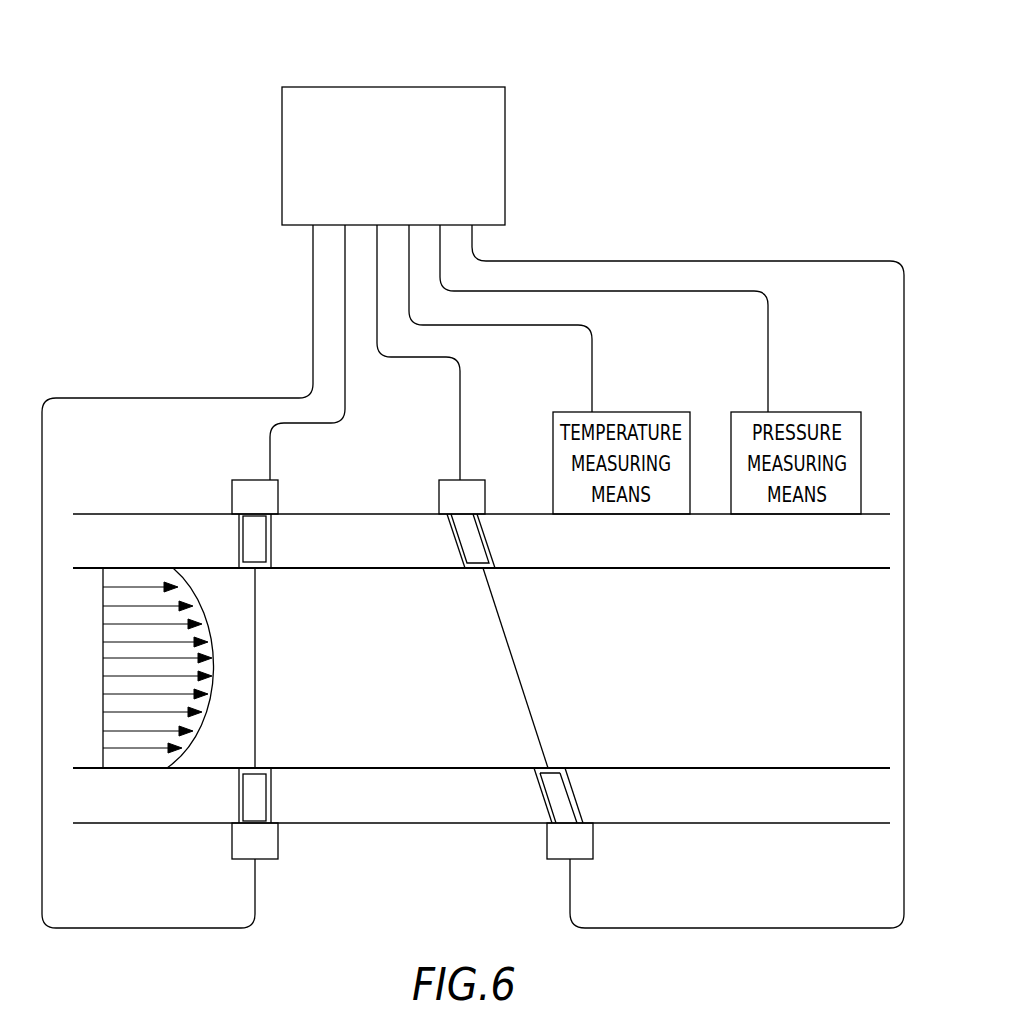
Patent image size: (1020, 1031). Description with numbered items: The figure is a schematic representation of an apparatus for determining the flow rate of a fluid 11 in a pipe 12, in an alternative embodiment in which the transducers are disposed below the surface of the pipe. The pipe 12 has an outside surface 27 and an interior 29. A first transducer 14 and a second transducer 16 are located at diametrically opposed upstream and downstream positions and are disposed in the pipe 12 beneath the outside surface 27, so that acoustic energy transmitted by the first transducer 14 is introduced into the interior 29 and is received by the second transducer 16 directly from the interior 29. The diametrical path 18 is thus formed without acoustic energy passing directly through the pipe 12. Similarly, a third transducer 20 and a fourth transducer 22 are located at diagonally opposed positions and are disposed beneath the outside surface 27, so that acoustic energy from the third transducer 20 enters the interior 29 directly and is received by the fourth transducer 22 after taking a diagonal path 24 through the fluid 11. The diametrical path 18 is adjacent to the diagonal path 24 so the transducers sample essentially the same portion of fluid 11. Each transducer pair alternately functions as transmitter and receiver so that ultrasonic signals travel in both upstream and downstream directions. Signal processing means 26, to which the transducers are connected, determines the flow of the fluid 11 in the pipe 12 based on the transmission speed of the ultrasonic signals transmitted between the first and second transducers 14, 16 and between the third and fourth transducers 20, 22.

The fluid 11 is at (206, 643).
The pipe 12 is at (141, 526).
The first transducer 14 is at (238, 498).
The second transducer 16 is at (243, 846).
The diametrical path 18 is at (256, 705).
The third transducer 20 is at (593, 858).
The fourth transducer 22 is at (451, 478).
The diagonal path 24 is at (520, 678).
The signal processing means 26 is at (506, 108).
The outside surface 27 is at (378, 823).
The interior 29 is at (683, 718).